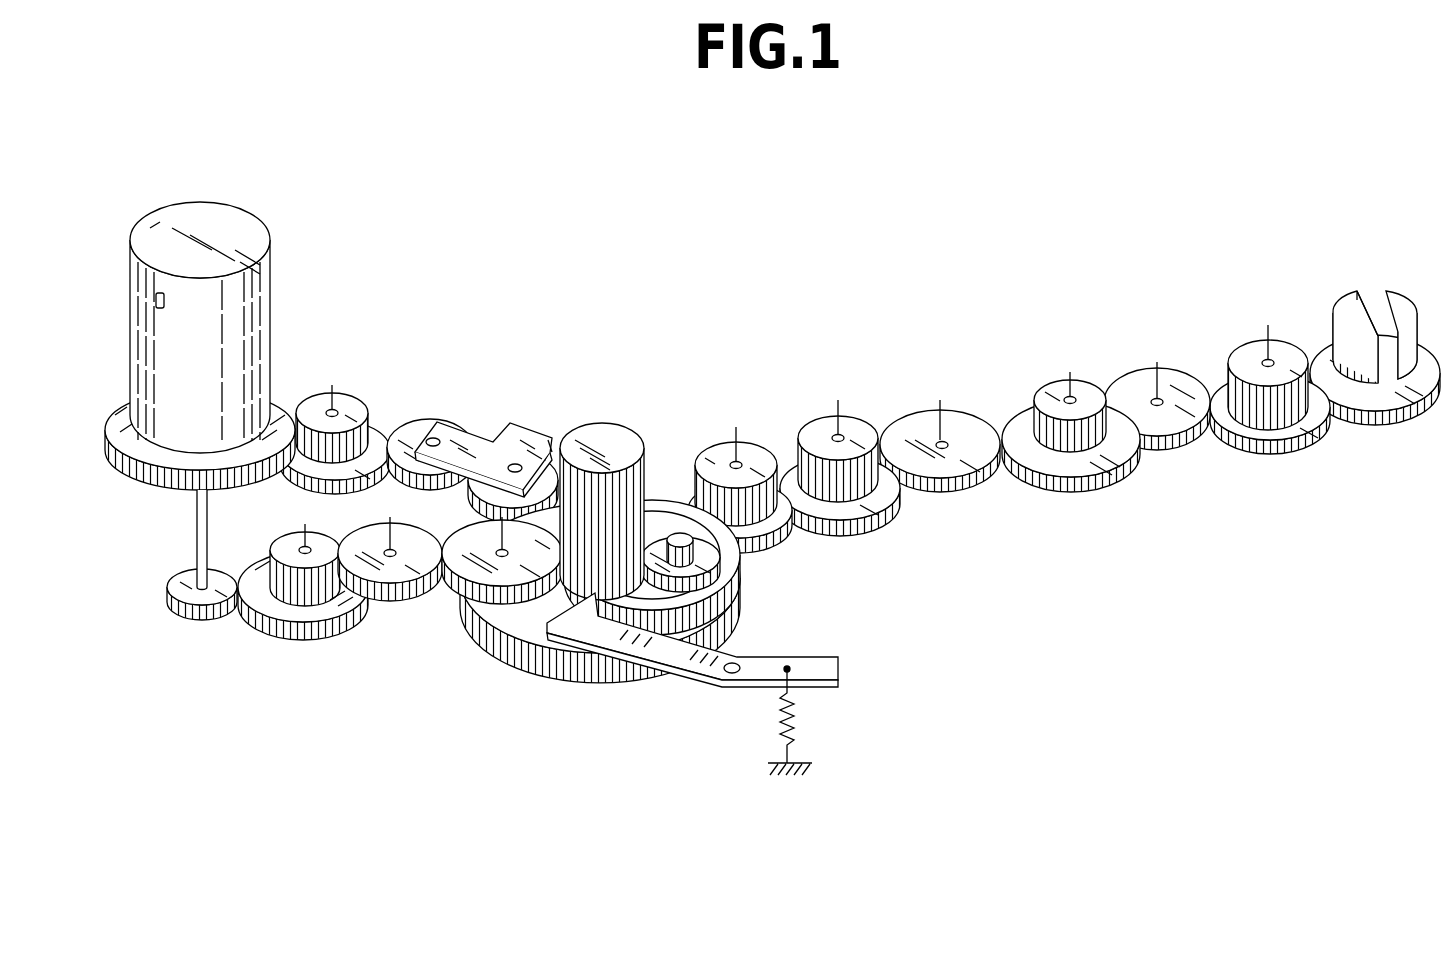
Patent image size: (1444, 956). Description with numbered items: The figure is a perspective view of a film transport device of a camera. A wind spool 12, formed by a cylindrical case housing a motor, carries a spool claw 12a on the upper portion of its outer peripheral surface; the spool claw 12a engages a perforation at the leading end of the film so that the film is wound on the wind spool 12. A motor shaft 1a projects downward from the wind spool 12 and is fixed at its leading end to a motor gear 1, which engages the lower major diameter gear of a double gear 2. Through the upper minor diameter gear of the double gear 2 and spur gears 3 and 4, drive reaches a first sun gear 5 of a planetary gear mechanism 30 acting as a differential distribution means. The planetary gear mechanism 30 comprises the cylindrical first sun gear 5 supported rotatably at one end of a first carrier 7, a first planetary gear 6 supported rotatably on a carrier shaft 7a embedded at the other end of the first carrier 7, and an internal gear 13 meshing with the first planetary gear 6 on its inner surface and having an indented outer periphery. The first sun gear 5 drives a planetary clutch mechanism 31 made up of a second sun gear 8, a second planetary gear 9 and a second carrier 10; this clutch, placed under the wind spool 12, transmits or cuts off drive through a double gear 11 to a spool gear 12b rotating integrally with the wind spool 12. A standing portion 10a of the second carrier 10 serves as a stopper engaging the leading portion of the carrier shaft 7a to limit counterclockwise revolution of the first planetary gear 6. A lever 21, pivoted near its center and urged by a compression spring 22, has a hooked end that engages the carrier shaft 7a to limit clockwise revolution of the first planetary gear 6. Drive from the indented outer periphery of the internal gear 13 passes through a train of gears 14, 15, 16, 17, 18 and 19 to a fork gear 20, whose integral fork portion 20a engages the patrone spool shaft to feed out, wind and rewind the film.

The motor gear 1 is at (190, 625).
The motor shaft 1a is at (200, 533).
The double gear 2 is at (287, 630).
The spur gear 3 is at (393, 603).
The spur gear 4 is at (465, 595).
The first sun gear 5 is at (623, 440).
The first planetary gear 6 is at (735, 577).
The first carrier 7 is at (637, 595).
The carrier shaft 7a is at (735, 547).
The second sun gear 8 is at (477, 448).
The second planetary gear 9 is at (412, 420).
The second carrier 10 is at (498, 452).
The standing portion 10a is at (546, 442).
The double gear 11 is at (320, 395).
The wind spool 12 is at (257, 277).
The spool claw 12a is at (160, 292).
The spool gear 12b is at (283, 390).
The internal gear 13 is at (590, 667).
The gear 14 is at (757, 458).
The gear 15 is at (828, 427).
The gear 16 is at (920, 420).
The gear 17 is at (1060, 390).
The gear 18 is at (1135, 378).
The gear 19 is at (1255, 353).
The fork gear 20 is at (1365, 412).
The fork portion 20a is at (1395, 298).
The lever 21 is at (840, 662).
The compression spring 22 is at (796, 718).
The planetary gear mechanism 30 is at (523, 674).
The planetary clutch mechanism 31 is at (445, 410).